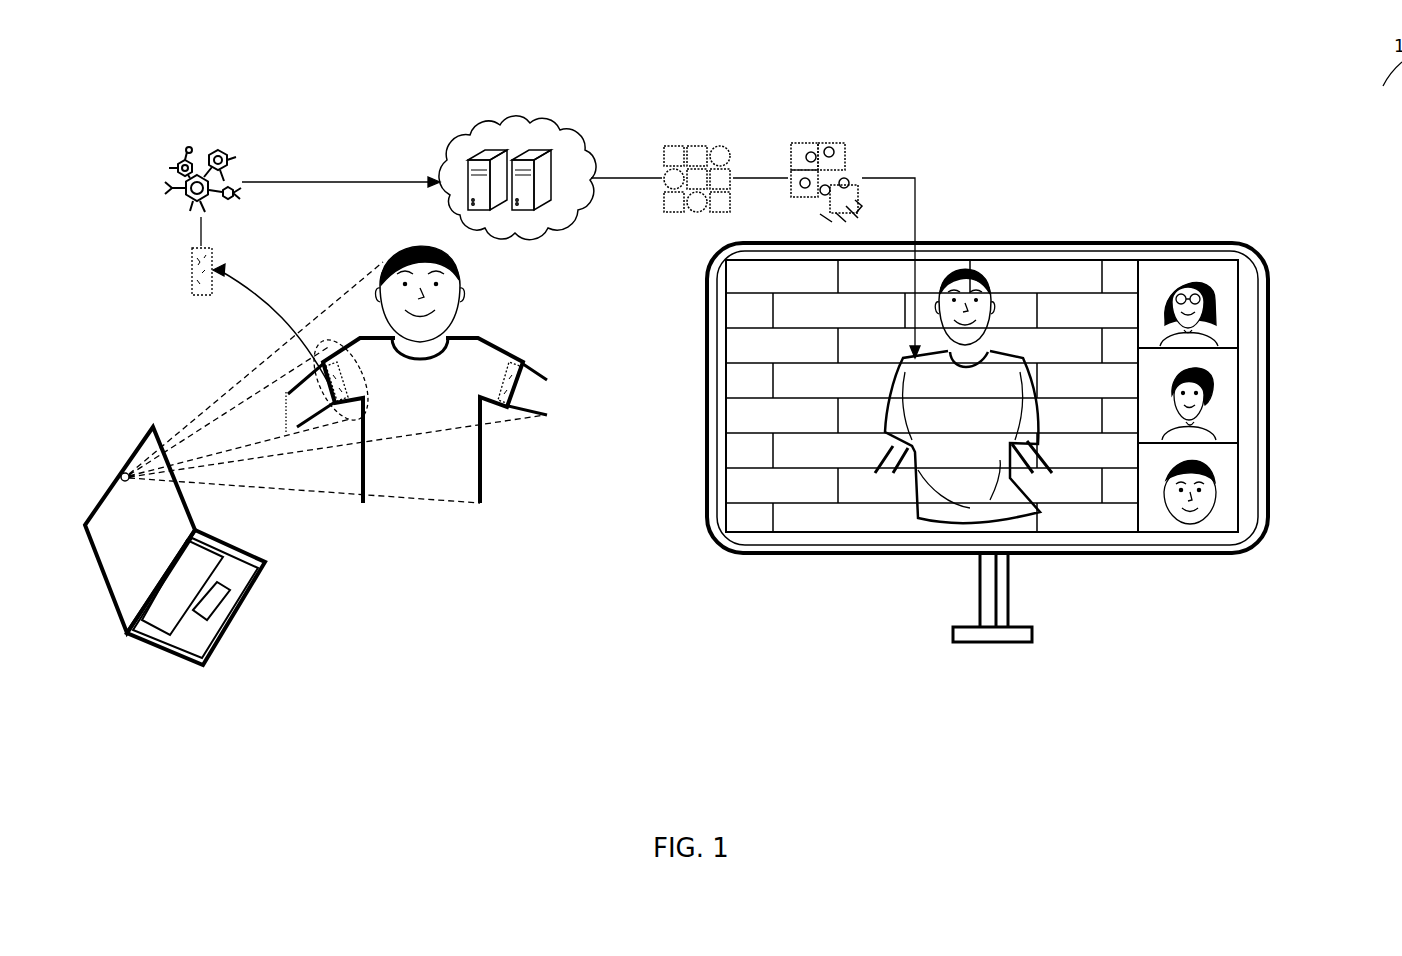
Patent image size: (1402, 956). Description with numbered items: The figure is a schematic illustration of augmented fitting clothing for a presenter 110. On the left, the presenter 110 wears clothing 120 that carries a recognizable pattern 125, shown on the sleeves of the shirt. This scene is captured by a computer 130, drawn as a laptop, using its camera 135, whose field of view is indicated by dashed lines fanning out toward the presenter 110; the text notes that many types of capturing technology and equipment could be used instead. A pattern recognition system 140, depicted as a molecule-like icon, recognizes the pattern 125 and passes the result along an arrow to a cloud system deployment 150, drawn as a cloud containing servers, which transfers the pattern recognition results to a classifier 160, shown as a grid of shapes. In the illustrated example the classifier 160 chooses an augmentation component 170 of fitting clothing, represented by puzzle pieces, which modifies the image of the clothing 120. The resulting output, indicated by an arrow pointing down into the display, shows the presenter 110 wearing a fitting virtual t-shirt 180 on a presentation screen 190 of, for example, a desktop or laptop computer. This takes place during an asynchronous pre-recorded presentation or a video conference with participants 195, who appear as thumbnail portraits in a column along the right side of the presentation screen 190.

The presenter 110 is at (383, 260).
The clothing 120 is at (438, 415).
The recognizable pattern 125 is at (190, 273).
The computer 130 is at (154, 543).
The camera 135 is at (122, 474).
The pattern recognition system 140 is at (177, 163).
The cloud system deployment 150 is at (458, 136).
The classifier 160 is at (672, 148).
The augmentation component 170 is at (812, 143).
The fitting virtual t-shirt 180 is at (978, 423).
The presentation screen 190 is at (1193, 242).
The participants 195 is at (1200, 414).